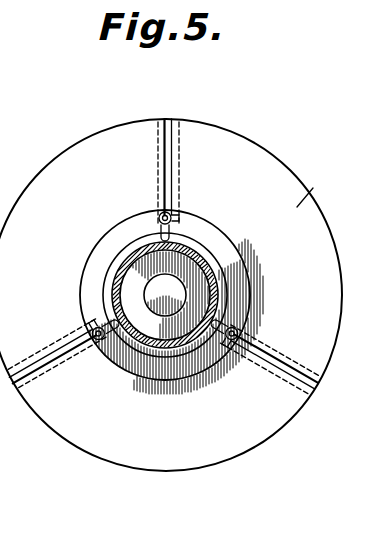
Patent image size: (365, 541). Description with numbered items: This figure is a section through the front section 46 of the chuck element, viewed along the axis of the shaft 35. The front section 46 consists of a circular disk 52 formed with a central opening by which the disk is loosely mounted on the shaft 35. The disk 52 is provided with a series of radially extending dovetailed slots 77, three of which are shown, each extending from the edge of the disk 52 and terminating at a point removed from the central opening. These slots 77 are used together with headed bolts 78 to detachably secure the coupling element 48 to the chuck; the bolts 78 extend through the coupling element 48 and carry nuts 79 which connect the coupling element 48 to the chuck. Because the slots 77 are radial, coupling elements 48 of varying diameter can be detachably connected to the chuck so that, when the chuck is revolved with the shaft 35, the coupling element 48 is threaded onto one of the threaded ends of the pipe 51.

The shaft 35 is at (165, 295).
The front section 46 is at (251, 141).
The coupling element 48 is at (227, 260).
The pipe 51 is at (123, 267).
The circular disk 52 is at (314, 189).
The dovetailed slots 77 is at (163, 153).
The headed bolts 78 is at (175, 219).
The nuts 79 is at (172, 214).